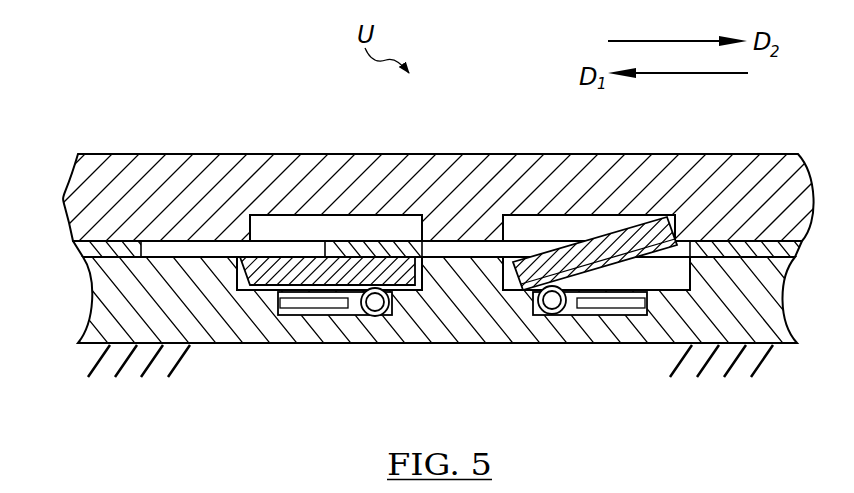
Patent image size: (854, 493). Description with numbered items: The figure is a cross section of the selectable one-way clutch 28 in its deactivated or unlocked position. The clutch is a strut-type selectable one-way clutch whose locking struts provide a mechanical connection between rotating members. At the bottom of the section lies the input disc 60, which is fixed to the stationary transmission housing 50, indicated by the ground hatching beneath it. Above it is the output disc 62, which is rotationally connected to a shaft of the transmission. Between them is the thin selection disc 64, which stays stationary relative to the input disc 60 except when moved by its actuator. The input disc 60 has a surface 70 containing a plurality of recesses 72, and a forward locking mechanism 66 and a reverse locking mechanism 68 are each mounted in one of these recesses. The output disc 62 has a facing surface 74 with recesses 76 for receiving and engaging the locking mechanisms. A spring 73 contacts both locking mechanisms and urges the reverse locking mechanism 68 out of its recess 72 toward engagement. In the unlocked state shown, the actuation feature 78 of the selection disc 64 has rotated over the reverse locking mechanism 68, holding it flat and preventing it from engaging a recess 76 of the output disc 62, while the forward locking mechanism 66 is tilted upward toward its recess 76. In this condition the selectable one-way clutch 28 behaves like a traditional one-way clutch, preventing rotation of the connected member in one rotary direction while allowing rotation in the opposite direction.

The selectable one-way clutch 28 is at (131, 111).
The transmission housing 50 is at (97, 360).
The input disc 60 is at (757, 307).
The output disc 62 is at (760, 185).
The selection disc 64 is at (143, 248).
The forward locking mechanism 66 is at (605, 224).
The reverse locking mechanism 68 is at (291, 248).
The surface 70 is at (203, 257).
The recesses 72 is at (636, 277).
The spring 73 is at (343, 313).
The surface 74 is at (456, 252).
The recesses 76 is at (266, 221).
The actuation feature 78 is at (361, 247).